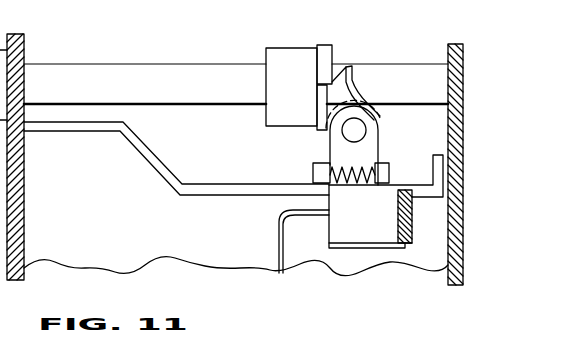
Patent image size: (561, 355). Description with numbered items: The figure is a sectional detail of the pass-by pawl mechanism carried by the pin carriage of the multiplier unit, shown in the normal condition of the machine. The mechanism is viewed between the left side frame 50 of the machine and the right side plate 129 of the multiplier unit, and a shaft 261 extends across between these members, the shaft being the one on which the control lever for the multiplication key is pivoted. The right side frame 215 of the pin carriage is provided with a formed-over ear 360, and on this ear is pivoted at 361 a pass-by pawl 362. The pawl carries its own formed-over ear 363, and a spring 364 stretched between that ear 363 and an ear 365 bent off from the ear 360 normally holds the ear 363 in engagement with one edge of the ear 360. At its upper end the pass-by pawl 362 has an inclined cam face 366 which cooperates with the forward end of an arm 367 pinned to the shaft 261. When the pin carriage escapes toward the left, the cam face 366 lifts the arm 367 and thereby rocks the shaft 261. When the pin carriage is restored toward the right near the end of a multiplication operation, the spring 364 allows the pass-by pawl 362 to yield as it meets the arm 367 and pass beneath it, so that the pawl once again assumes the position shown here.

The left side frame 50 is at (18, 53).
The right side plate 129 is at (457, 125).
The shaft 261 is at (181, 73).
The arm 367 is at (325, 45).
The inclined cam face 366 is at (352, 74).
The pass-by pawl 362 is at (372, 152).
The pivot 361 is at (358, 130).
The spring 364 is at (330, 158).
The ear 365 is at (313, 173).
The formed-over ear 363 is at (389, 173).
The formed-over ear 360 is at (337, 232).
The right side frame 215 is at (405, 214).